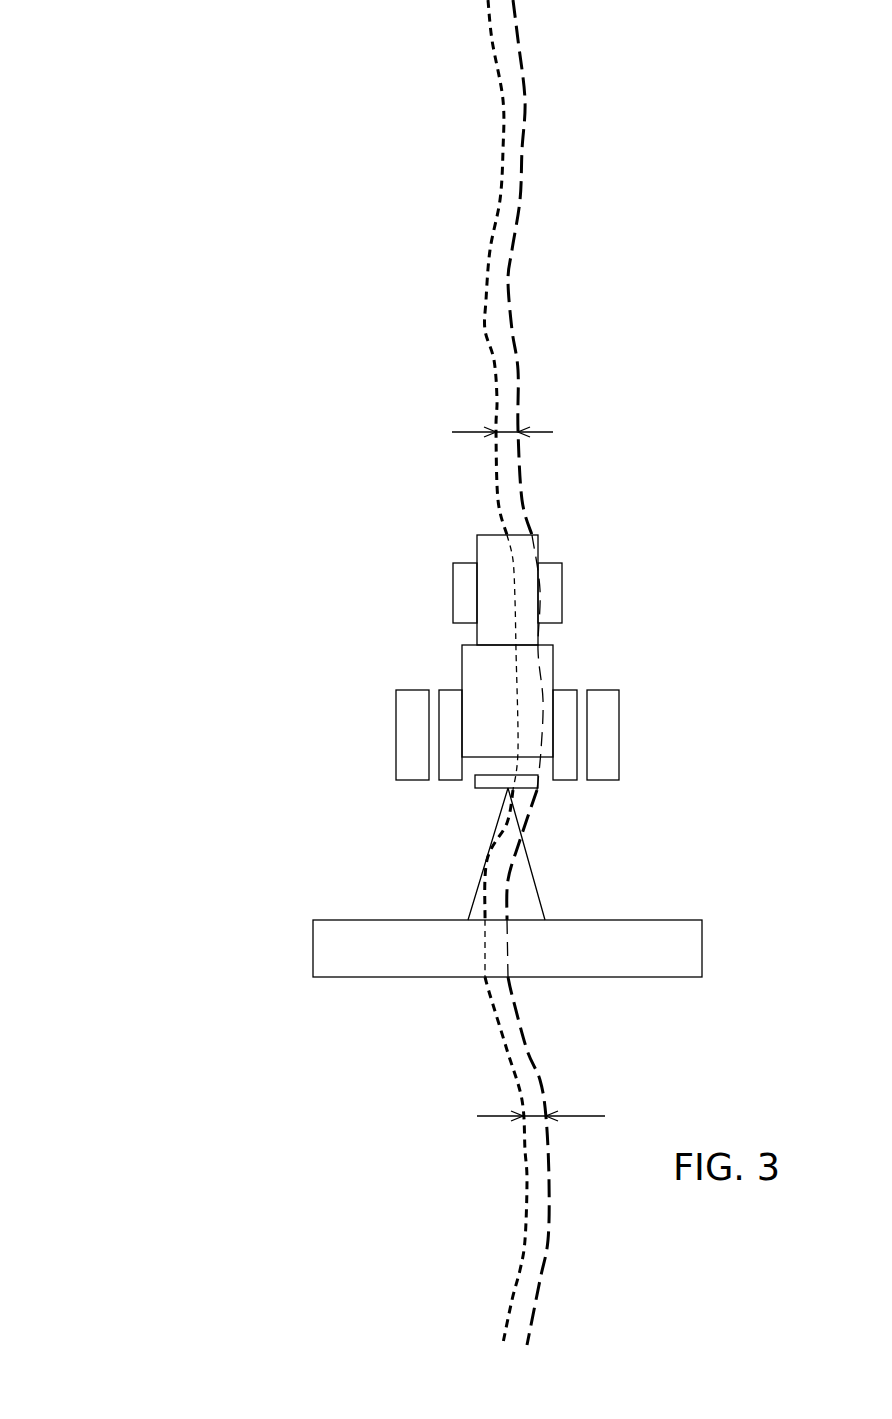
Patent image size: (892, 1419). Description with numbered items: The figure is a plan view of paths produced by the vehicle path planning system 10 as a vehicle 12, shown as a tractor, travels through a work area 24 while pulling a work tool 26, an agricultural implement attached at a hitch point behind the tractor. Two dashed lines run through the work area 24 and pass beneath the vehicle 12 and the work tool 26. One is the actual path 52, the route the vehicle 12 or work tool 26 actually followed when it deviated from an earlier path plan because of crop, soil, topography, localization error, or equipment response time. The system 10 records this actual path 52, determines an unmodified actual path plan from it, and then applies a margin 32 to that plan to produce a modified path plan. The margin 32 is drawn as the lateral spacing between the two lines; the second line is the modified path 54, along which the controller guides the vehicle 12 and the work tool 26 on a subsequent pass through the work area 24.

The system 10 is at (446, 727).
The vehicle 12 is at (545, 663).
The work area 24 is at (212, 357).
The work tool 26 is at (682, 930).
The margin 32 is at (512, 776).
The actual path 52 is at (482, 270).
The modified path 54 is at (515, 335).